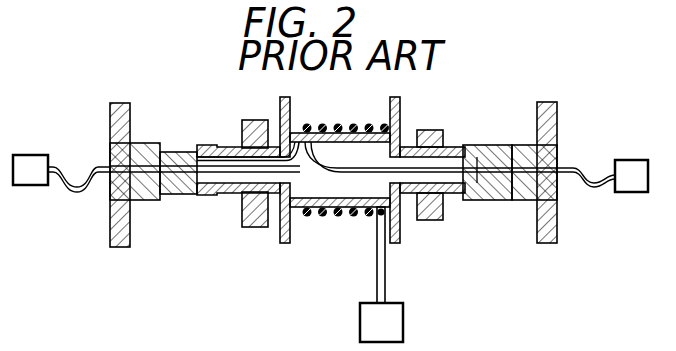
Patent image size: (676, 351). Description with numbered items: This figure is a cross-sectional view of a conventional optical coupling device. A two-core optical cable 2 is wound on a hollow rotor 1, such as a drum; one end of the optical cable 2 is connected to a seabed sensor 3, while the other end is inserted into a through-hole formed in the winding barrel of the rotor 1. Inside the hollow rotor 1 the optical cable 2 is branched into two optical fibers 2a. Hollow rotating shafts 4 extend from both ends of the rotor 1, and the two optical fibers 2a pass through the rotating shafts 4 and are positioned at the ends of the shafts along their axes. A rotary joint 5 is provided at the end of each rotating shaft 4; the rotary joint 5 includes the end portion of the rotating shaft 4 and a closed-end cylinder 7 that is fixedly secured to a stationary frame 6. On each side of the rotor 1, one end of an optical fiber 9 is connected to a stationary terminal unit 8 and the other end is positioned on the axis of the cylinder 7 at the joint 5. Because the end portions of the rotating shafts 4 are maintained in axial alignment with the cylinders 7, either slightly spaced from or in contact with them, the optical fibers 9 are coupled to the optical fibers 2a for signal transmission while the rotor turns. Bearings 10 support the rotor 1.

The rotor 1 is at (396, 113).
The optical cable 2 is at (382, 273).
The optical fibers 2a is at (231, 174).
The seabed sensor 3 is at (393, 324).
The rotating shafts 4 is at (231, 148).
The rotary joint 5 is at (182, 204).
The stationary frame 6 is at (117, 126).
The closed-end cylinder 7 is at (147, 192).
The stationary terminal unit 8 is at (34, 166).
The optical fiber 9 is at (78, 191).
The bearings 10 is at (255, 120).